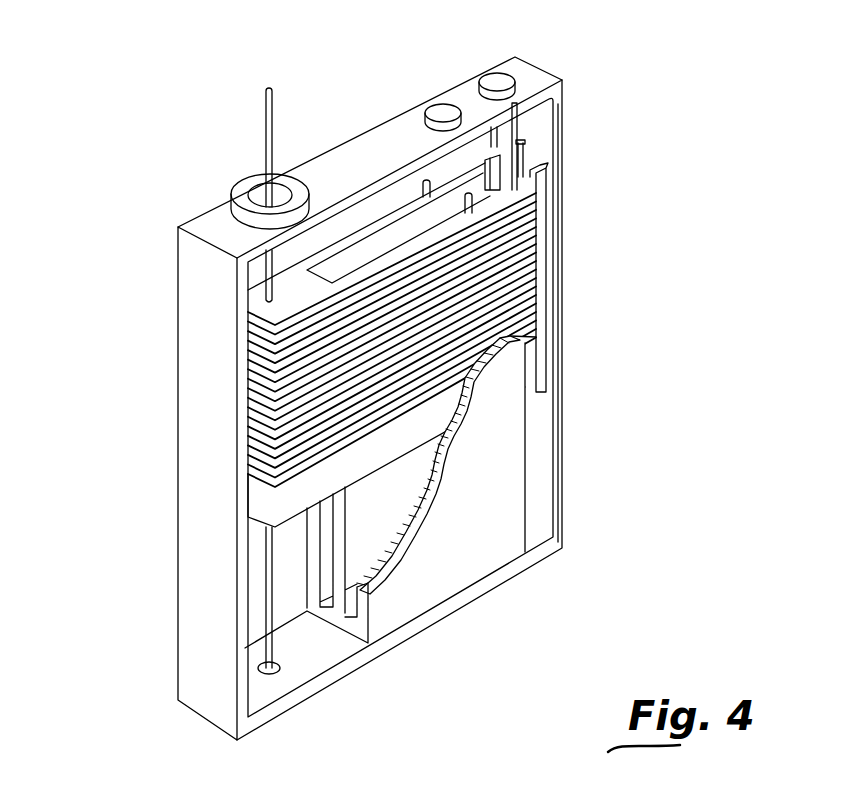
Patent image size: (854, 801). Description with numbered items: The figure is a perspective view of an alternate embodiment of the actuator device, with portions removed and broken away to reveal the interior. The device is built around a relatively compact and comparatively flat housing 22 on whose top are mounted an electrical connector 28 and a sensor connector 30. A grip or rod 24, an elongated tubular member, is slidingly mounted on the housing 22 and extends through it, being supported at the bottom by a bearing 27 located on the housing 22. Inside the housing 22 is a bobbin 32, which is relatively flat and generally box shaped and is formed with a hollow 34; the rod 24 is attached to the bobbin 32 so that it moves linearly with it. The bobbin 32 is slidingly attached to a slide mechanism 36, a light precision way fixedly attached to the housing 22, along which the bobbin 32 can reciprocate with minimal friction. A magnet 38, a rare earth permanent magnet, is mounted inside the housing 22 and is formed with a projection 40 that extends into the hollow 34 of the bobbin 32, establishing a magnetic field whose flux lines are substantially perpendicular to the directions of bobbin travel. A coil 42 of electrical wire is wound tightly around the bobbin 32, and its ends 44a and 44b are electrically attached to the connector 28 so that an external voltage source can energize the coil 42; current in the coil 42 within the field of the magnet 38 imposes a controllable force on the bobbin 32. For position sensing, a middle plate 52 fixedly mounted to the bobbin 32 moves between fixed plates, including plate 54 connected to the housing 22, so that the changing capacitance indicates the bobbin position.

The housing 22 is at (188, 262).
The rod 24 is at (266, 117).
The bearing 27 is at (280, 668).
The electrical connector 28 is at (446, 110).
The sensor connector 30 is at (502, 80).
The bobbin 32 is at (275, 505).
The hollow 34 is at (385, 240).
The slide mechanism 36 is at (546, 176).
The magnet 38 is at (500, 528).
The projection 40 is at (367, 552).
The coil 42 is at (255, 412).
The end of electrical wire 44a is at (462, 190).
The end of electrical wire 44b is at (425, 188).
The middle plate 52 is at (523, 152).
The plate 54 is at (530, 122).